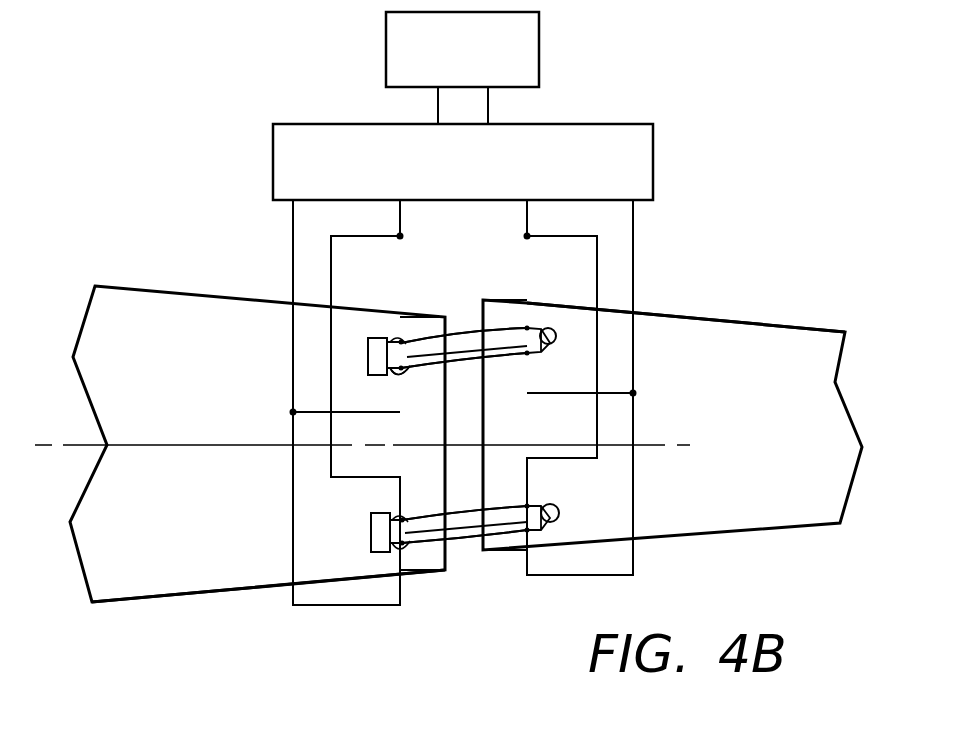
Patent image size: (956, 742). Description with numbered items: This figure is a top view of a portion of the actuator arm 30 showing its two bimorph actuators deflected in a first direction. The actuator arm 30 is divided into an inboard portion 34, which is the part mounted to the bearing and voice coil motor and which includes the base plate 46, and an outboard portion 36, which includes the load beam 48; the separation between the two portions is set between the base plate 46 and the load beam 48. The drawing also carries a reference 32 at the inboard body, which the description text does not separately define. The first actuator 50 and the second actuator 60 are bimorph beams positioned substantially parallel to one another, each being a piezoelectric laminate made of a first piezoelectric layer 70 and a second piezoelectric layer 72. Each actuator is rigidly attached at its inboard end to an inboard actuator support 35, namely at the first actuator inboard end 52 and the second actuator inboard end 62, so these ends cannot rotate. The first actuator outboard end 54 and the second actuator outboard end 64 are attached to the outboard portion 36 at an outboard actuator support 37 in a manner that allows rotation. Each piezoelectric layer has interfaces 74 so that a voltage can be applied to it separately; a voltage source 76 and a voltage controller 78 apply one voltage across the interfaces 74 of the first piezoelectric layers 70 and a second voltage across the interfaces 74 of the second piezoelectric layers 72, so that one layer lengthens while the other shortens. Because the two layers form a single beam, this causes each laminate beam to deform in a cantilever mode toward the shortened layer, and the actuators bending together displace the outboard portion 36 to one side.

The actuator arm 30 is at (168, 231).
The first body portion 32 is at (147, 443).
The inboard portion 34 is at (120, 576).
The inboard actuator support 35 is at (368, 358).
The outboard portion 36 is at (703, 347).
The outboard actuator support 37 is at (547, 327).
The base plate 46 is at (262, 572).
The load beam 48 is at (812, 358).
The first actuator 50 is at (467, 545).
The first actuator inboard end 52 is at (371, 545).
The first actuator outboard end 54 is at (540, 500).
The second actuator 60 is at (470, 340).
The second actuator inboard end 62 is at (393, 380).
The second actuator outboard end 64 is at (537, 350).
The first piezoelectric layer 70 is at (423, 347).
The second piezoelectric layer 72 is at (500, 352).
The interfaces 74 is at (517, 333).
The voltage source 76 is at (522, 26).
The voltage controller 78 is at (630, 138).